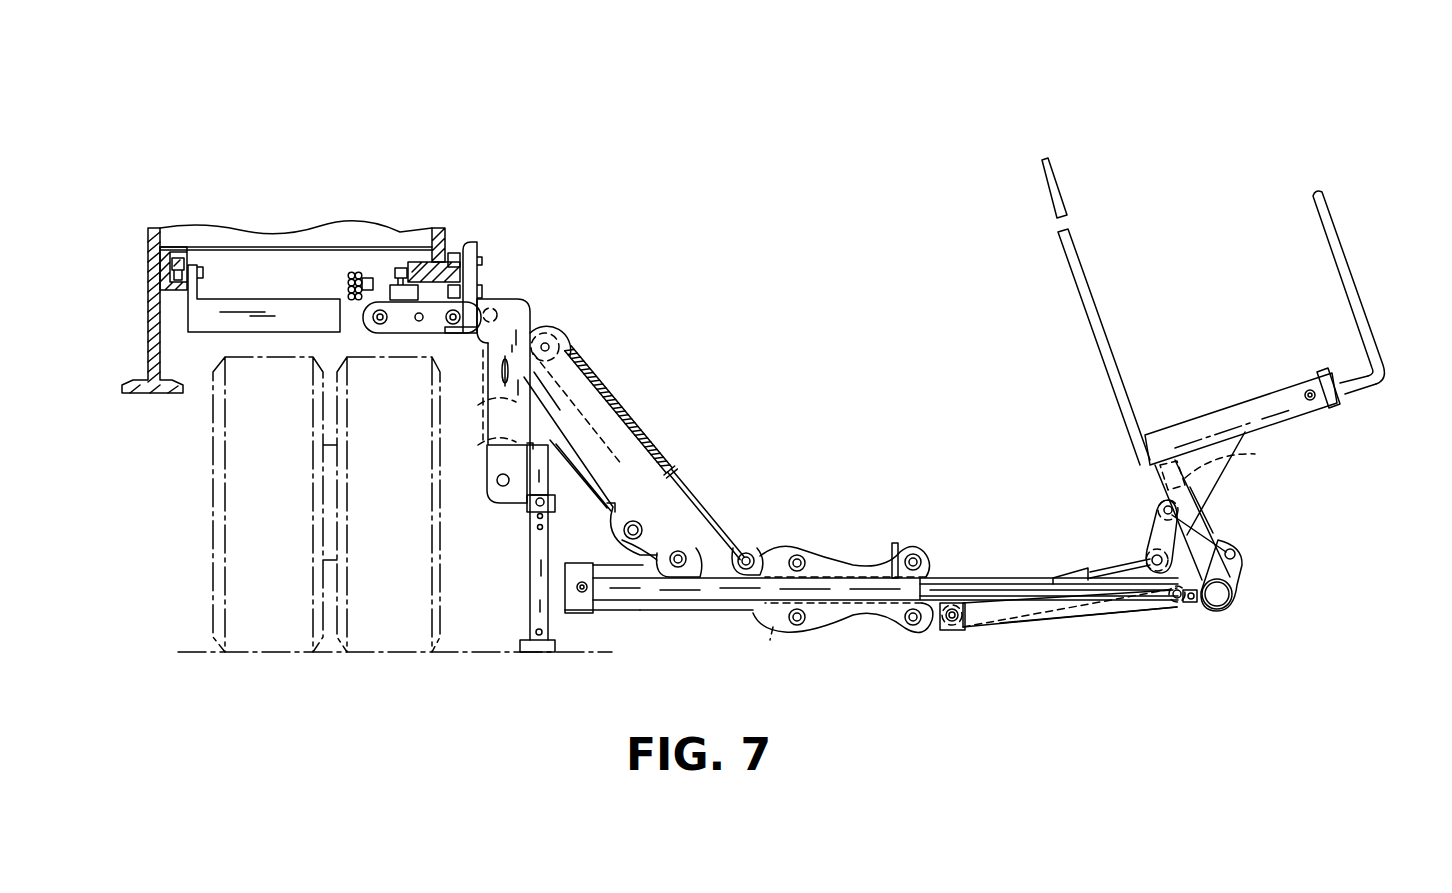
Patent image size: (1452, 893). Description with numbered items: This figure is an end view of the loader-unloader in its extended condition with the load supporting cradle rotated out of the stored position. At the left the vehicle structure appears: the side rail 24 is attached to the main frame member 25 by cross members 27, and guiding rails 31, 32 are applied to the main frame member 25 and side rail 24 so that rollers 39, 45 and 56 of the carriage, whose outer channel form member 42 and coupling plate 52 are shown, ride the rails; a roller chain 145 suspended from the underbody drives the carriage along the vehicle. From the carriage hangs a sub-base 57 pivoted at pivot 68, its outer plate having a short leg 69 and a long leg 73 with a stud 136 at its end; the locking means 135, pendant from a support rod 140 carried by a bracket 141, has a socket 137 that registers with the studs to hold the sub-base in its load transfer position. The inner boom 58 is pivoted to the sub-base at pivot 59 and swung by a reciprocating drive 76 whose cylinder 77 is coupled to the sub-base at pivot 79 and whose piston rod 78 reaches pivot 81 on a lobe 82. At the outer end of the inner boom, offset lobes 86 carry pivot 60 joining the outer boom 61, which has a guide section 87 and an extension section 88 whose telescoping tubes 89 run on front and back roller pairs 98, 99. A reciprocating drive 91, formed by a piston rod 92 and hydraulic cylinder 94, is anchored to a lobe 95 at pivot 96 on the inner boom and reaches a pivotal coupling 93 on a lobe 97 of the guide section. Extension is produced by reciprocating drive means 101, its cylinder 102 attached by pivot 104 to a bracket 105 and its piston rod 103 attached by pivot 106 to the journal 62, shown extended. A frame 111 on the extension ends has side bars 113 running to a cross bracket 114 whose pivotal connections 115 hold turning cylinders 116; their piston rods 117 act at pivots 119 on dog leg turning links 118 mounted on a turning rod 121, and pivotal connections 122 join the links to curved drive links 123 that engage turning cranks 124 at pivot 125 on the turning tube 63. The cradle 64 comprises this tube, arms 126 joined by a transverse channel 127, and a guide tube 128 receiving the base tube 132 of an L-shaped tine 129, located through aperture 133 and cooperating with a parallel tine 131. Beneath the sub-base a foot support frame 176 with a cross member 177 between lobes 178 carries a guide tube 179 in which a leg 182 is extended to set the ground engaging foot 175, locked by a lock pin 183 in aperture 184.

The side rail 24 is at (437, 232).
The main frame member 25 is at (150, 335).
The cross member 27 is at (248, 232).
The guiding rail 31 is at (163, 280).
The guiding rail 32 is at (420, 268).
The roller 39 is at (178, 262).
The outer channel form member 42 is at (470, 248).
The roller 45 is at (455, 262).
The coupling plate 52 is at (340, 255).
The roller 56 is at (362, 272).
The sub-base 57 is at (476, 440).
The inner boom 58 is at (640, 455).
The pivot 59 is at (523, 290).
The pivot 60 is at (745, 552).
The outer boom 61 is at (835, 552).
The journal 62 is at (1222, 610).
The turning tube 63 is at (1229, 598).
The load engaging cradle 64 is at (1192, 415).
The pivot 68 is at (460, 315).
The short leg 69 is at (478, 340).
The long leg 73 is at (485, 402).
The reciprocating drive 76 is at (577, 484).
The cylinder 77 is at (610, 514).
The piston rod 78 is at (680, 478).
The pivot 79 is at (493, 360).
The pivot 81 is at (643, 531).
The lobe 82 is at (640, 555).
The offset lobe 86 is at (702, 515).
The guide section 87 is at (740, 615).
The extension section 88 is at (962, 575).
The telescoping tube 89 is at (980, 578).
The reciprocating drive 91 is at (612, 388).
The piston rod 92 is at (700, 505).
The pivotal coupling 93 is at (787, 553).
The hydraulic cylinder 94 is at (585, 368).
The lobe 95 is at (550, 332).
The pivot 96 is at (550, 347).
The lobe 97 is at (763, 550).
The front roller pair 98 is at (890, 628).
The back roller pair 99 is at (771, 640).
The reciprocating drive means 101 is at (684, 605).
The cylinder 102 is at (713, 605).
The piston rod 103 is at (943, 588).
The pivot 104 is at (587, 592).
The bracket 105 is at (577, 595).
The pivot 106 is at (1193, 610).
The frame 111 is at (1063, 630).
The side bar 113 is at (1100, 617).
The cross bracket 114 is at (938, 633).
The pivotal connection 115 is at (966, 628).
The turning cylinder 116 is at (1063, 577).
The piston rod 117 is at (1100, 577).
The dog leg turning link 118 is at (1153, 532).
The pivot 119 is at (1150, 558).
The turning rod 121 is at (1163, 612).
The pivotal connection 122 is at (1165, 505).
The drive link 123 is at (1213, 533).
The turning crank 124 is at (1240, 566).
The pivot 125 is at (1238, 552).
The arm 126 is at (1205, 495).
The transverse channel 127 is at (1205, 466).
The guide tube 128 is at (1253, 410).
The L-shaped tine 129 is at (1322, 218).
The tine 131 is at (1090, 293).
The base tube 132 is at (1363, 380).
The aperture 133 is at (1310, 403).
The locking means 135 is at (518, 298).
The stud 136 is at (503, 503).
The socket 137 is at (380, 324).
The support rod 140 is at (352, 333).
The bracket 141 is at (338, 299).
The roller chain 145 is at (345, 283).
The ground engaging foot 175 is at (527, 653).
The foot support frame 176 is at (520, 467).
The cross member 177 is at (622, 410).
The lobe 178 is at (527, 456).
The guide tube 179 is at (550, 478).
The leg 182 is at (533, 605).
The lock pin 183 is at (535, 508).
The aperture 184 is at (537, 530).